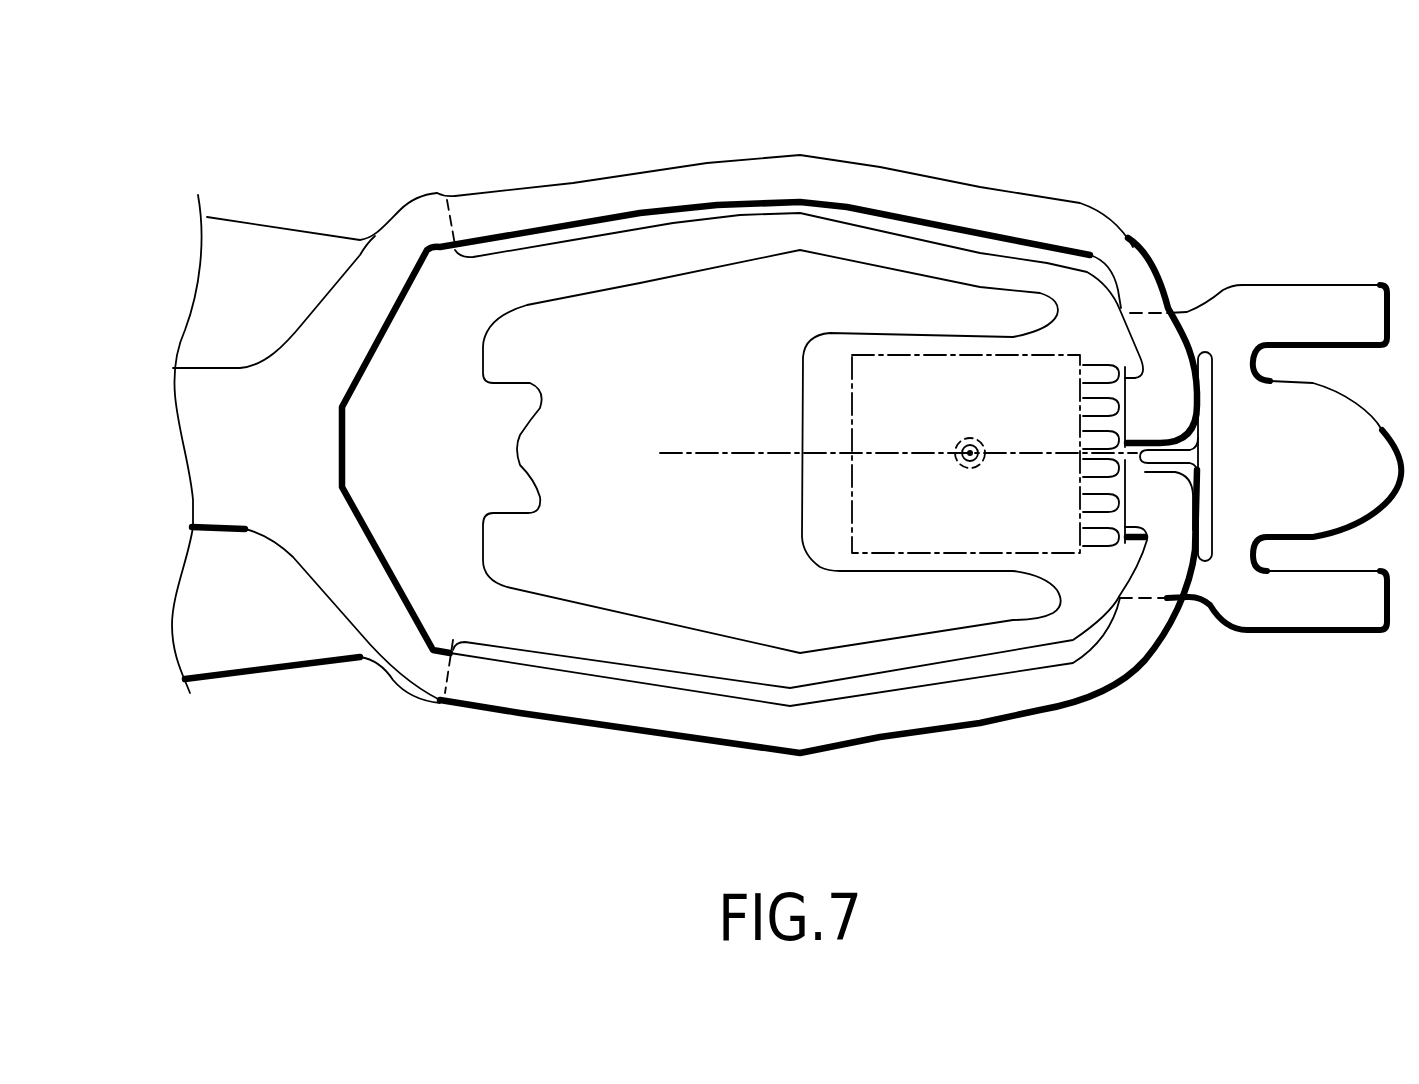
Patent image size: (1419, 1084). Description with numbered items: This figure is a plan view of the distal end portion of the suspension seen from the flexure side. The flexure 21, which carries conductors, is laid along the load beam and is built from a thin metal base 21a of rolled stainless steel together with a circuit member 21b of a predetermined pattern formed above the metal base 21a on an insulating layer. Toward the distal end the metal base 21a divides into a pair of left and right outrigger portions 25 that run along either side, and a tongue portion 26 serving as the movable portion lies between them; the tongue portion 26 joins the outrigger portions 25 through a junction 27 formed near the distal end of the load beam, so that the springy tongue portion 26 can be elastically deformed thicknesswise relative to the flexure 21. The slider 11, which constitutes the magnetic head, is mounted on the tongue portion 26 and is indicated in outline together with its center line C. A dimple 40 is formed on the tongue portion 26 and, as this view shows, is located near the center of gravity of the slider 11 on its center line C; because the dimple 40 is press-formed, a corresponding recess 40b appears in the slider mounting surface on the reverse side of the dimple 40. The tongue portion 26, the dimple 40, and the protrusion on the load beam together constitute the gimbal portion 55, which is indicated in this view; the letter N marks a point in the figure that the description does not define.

The flexure 21 is at (317, 205).
The metal base 21a is at (267, 673).
The circuit member 21b is at (580, 195).
The outrigger portions 25 is at (733, 232).
The tongue portion 26 is at (814, 390).
The junction 27 is at (1080, 278).
The slider 11 is at (970, 355).
The dimple 40 is at (960, 440).
The recess 40b is at (977, 467).
The gimbal portion 55 is at (940, 470).
The center line C is at (733, 441).
The neutral position N is at (970, 443).